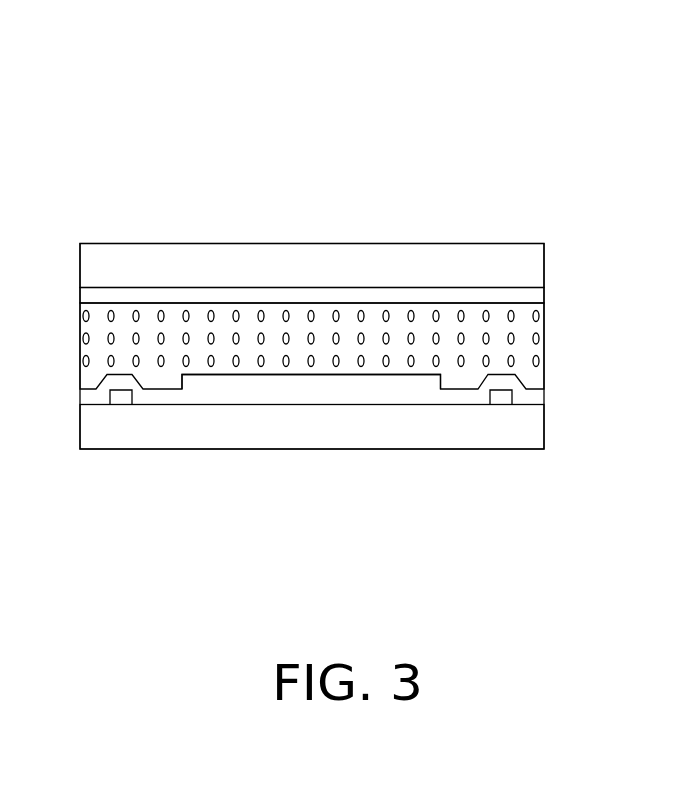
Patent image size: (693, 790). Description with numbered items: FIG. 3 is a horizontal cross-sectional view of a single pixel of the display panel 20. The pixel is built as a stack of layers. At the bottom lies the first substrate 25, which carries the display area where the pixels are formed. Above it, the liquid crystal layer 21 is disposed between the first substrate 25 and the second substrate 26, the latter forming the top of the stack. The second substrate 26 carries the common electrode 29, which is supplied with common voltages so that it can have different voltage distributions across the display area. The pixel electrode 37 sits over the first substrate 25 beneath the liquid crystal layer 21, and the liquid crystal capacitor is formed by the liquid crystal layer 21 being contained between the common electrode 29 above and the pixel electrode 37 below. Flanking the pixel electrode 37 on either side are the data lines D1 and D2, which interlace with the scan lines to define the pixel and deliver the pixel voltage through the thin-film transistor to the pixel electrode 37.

The display panel 20 is at (67, 65).
The second substrate 26 is at (544, 255).
The common electrode 29 is at (544, 298).
The liquid crystal layer 21 is at (544, 347).
The pixel electrode 37 is at (318, 380).
The first substrate 25 is at (544, 433).
The data line D1 is at (120, 400).
The data line D2 is at (498, 402).